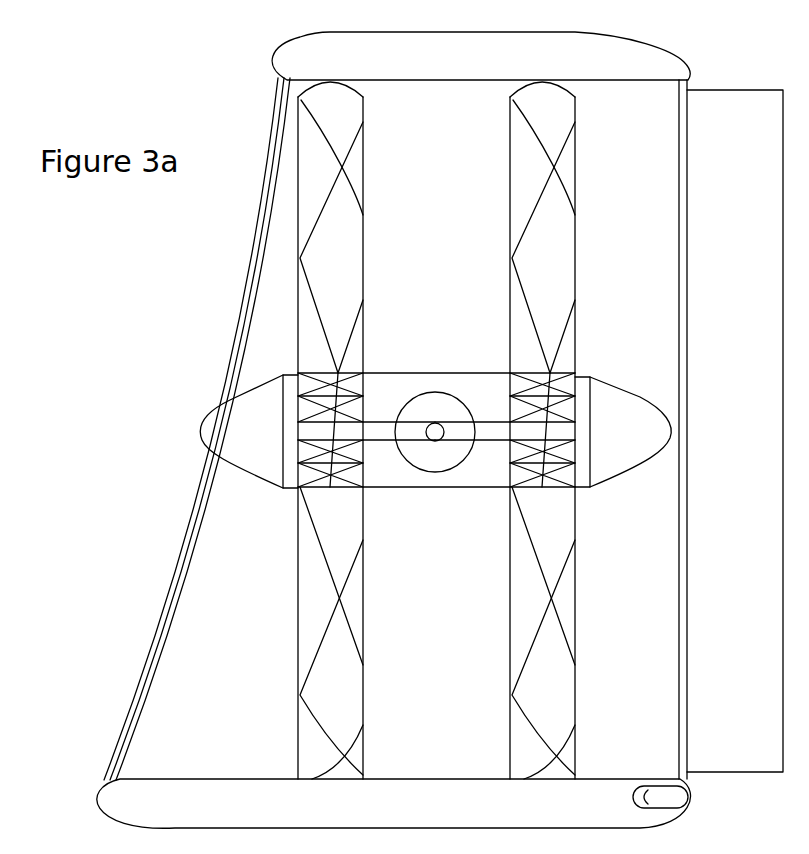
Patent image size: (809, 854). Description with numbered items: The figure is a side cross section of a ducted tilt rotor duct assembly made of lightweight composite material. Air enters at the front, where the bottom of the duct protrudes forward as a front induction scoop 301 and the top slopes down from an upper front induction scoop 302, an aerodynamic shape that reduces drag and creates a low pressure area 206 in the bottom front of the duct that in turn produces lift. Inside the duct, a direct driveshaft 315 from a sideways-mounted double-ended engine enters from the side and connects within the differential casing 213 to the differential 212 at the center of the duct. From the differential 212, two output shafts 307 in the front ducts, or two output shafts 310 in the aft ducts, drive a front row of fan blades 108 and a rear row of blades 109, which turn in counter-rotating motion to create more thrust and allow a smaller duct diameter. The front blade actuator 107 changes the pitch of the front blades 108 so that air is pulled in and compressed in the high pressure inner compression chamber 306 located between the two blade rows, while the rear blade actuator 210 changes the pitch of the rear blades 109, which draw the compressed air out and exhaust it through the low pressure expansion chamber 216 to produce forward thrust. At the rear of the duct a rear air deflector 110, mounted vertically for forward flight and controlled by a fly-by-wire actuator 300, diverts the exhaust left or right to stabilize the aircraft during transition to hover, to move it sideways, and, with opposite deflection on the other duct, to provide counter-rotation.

The front blade actuator 107 is at (228, 432).
The front row of fan blades 108 is at (328, 292).
The rear row of blades 109 is at (552, 292).
The rear air deflector 110 is at (738, 200).
The low pressure area 206 is at (220, 612).
The rear blade actuator 210 is at (613, 435).
The differential 212 is at (462, 415).
The differential casing 213 is at (447, 488).
The low pressure expansion chamber 216 is at (610, 640).
The fly-by-wire actuator 300 is at (637, 797).
The front induction scoop 301 is at (138, 812).
The upper front induction scoop 302 is at (290, 58).
The high pressure inner compression chamber 306 is at (460, 207).
The output shafts 307 is at (383, 430).
The output shafts 310 is at (487, 432).
The driveshaft 315 is at (435, 425).